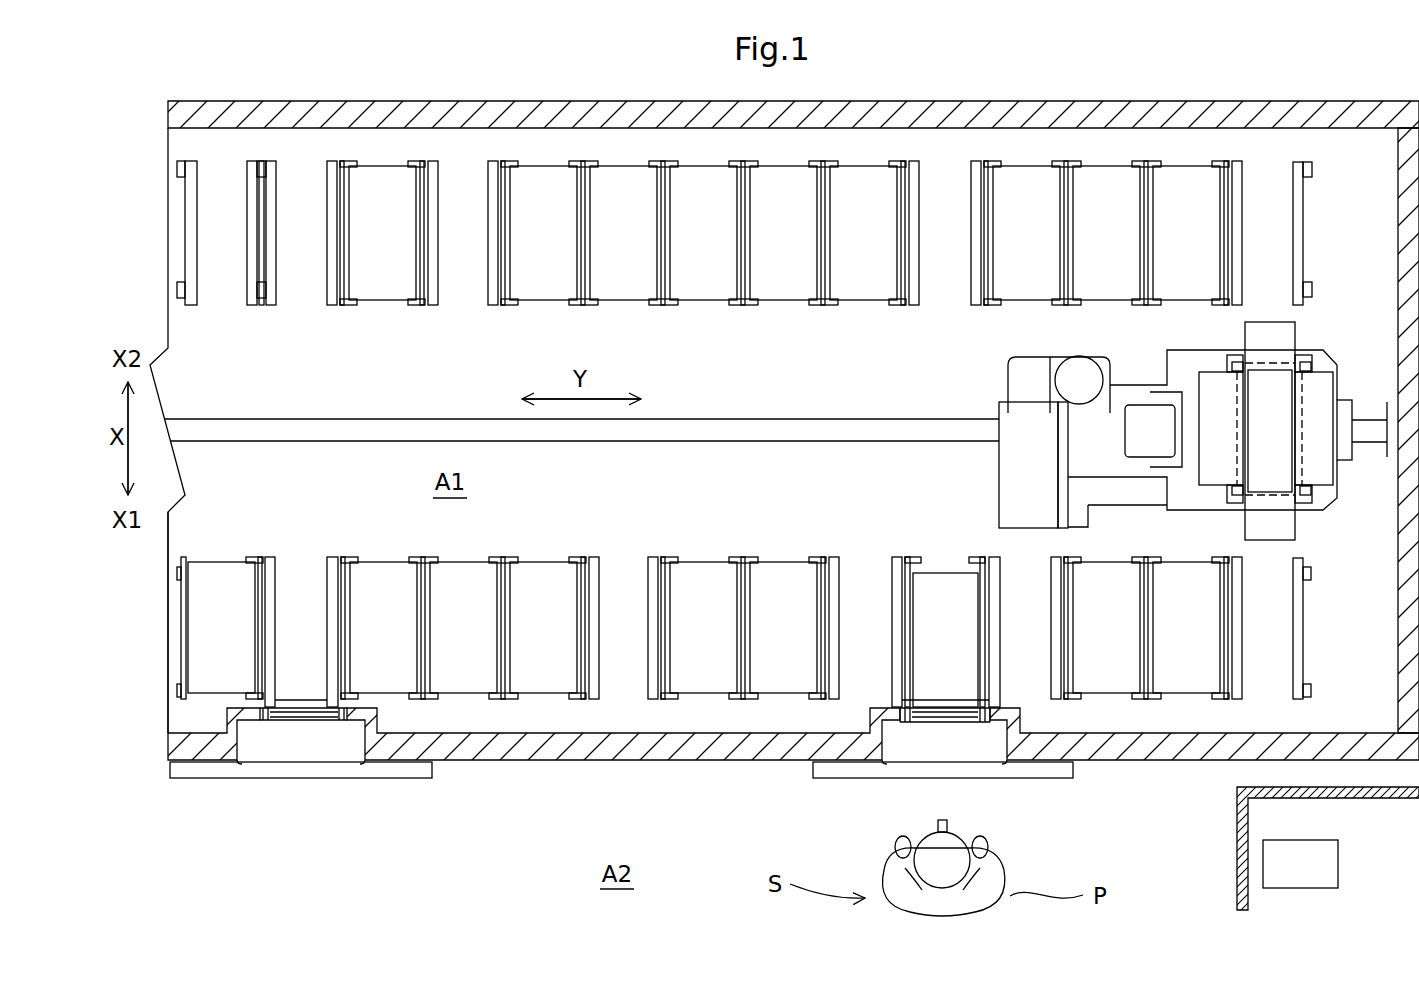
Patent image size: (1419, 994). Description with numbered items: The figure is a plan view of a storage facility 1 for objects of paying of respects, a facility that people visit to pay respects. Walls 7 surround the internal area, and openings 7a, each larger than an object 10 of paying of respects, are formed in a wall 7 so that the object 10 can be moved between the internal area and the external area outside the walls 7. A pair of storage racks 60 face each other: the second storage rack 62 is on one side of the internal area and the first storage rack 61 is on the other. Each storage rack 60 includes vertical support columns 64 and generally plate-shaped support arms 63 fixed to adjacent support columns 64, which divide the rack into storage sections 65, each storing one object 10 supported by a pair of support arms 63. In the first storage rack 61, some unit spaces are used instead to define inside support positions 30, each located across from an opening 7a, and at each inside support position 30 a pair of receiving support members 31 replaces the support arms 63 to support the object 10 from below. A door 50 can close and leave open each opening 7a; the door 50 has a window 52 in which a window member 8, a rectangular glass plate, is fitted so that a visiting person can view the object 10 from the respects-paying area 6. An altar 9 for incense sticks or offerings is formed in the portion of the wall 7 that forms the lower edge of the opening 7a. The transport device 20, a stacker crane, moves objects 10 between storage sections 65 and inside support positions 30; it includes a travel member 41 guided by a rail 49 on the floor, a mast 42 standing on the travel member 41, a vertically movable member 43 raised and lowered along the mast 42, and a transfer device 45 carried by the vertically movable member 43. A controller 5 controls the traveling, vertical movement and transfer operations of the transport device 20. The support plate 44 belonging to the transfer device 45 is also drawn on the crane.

The storage facility 1 is at (1274, 90).
The controller 5 is at (1338, 858).
The respects-paying area 6 is at (313, 790).
The wall 7 is at (1185, 754).
The opening 7a is at (333, 723).
The window member 8 is at (953, 723).
The altar 9 is at (378, 776).
The object of paying of respects 10 is at (874, 288).
The transport device 20 is at (996, 367).
The inside support position 30 is at (305, 684).
The receiving support member 31 is at (330, 572).
The travel member 41 is at (1128, 400).
The mast 42 is at (1147, 427).
The vertically movable member 43 is at (1215, 484).
The mast / support plate 44 is at (1276, 483).
The transfer device 45 is at (1304, 398).
The rail 49 is at (777, 431).
The door 50 is at (267, 721).
The window 52 is at (940, 726).
The storage rack 60 is at (1408, 430).
The first storage rack 61 is at (176, 626).
The second storage rack 62 is at (170, 236).
The support arm 63 is at (493, 301).
The support column 64 is at (984, 286).
The storage section 65 is at (384, 283).